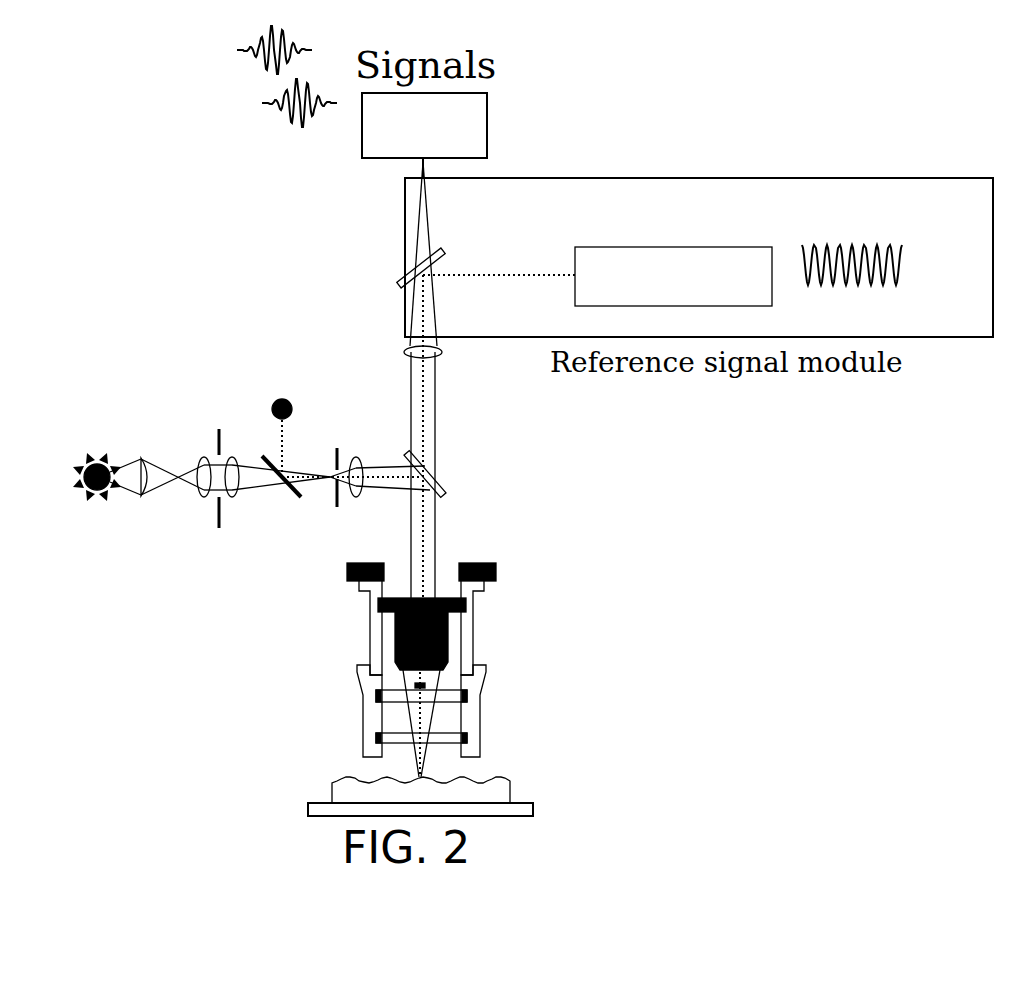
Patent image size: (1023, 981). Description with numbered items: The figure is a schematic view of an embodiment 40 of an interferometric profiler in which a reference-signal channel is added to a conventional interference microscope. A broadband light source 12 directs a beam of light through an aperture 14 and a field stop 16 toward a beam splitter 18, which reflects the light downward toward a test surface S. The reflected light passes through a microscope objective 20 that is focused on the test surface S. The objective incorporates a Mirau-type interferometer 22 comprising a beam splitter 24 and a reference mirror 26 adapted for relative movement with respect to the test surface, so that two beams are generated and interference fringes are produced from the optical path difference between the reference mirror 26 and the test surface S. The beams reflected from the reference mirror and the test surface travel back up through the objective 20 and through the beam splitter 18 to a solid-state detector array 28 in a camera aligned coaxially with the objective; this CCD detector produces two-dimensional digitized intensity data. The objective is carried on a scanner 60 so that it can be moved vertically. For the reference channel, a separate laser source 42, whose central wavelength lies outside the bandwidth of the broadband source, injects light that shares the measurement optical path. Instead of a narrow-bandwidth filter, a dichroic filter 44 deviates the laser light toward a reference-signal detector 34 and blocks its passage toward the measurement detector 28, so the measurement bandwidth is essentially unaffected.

The light source 12 is at (82, 458).
The aperture 14 is at (217, 442).
The field stop 16 is at (338, 445).
The beam splitter 18 is at (447, 485).
The microscope objective 20 is at (395, 640).
The interferometer 22 is at (487, 685).
The beam splitter 24 is at (397, 731).
The reference mirror 26 is at (400, 700).
The solid-state detector array 28 is at (487, 120).
The reference-signal detector 34 is at (660, 246).
The embodiment 40 is at (662, 131).
The laser source 42 is at (277, 397).
The dichroic filter 44 is at (407, 275).
The scanner 60 is at (482, 587).
The test surface S is at (500, 781).